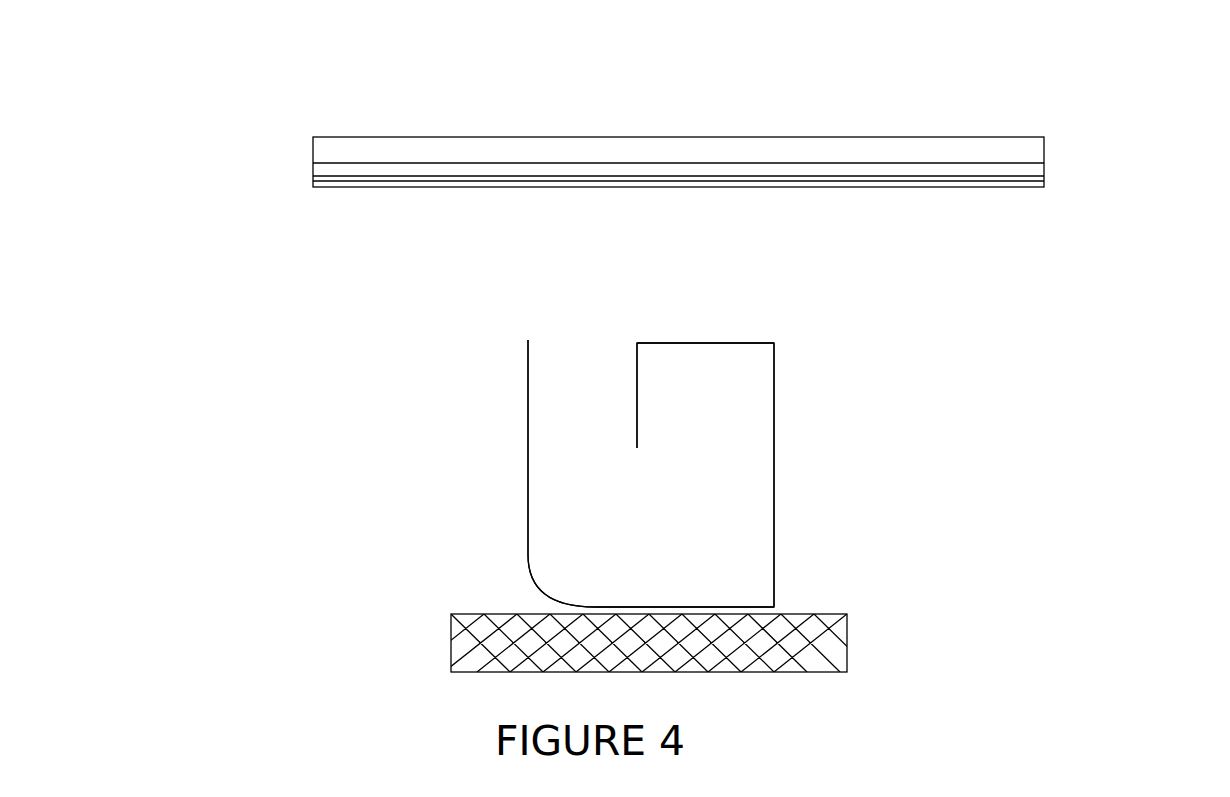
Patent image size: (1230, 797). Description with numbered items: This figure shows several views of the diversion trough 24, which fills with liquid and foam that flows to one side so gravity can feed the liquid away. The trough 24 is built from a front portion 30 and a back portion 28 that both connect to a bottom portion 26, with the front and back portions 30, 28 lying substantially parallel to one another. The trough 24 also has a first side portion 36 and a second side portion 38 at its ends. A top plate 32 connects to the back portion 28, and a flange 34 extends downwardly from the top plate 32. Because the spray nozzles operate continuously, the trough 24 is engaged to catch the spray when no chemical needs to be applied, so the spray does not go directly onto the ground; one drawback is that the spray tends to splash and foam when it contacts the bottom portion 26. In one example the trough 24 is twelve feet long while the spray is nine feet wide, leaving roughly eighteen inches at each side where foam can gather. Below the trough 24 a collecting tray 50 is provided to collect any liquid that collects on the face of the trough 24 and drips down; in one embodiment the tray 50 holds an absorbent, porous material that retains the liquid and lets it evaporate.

The trough 24 is at (1078, 107).
The bottom portion 26 is at (709, 614).
The back portion 28 is at (775, 560).
The front portion 30 is at (528, 434).
The top plate 32 is at (713, 341).
The flange 34 is at (639, 404).
The first side portion 36 is at (1046, 179).
The second side portion 38 is at (313, 162).
The collecting tray 50 is at (860, 640).